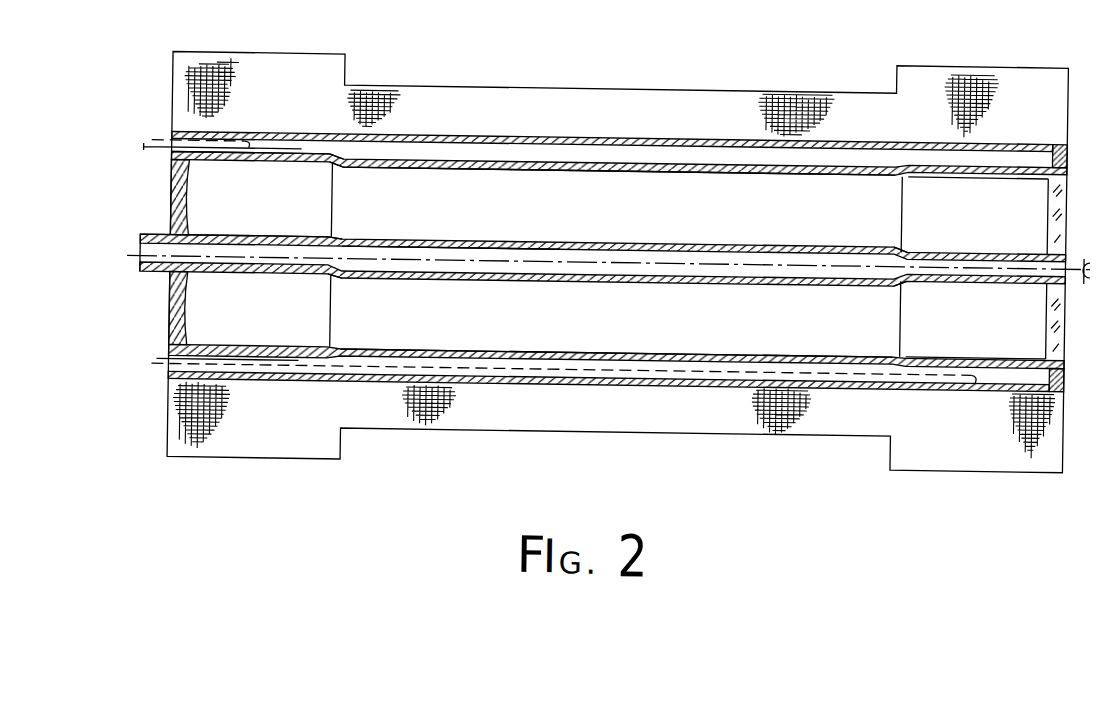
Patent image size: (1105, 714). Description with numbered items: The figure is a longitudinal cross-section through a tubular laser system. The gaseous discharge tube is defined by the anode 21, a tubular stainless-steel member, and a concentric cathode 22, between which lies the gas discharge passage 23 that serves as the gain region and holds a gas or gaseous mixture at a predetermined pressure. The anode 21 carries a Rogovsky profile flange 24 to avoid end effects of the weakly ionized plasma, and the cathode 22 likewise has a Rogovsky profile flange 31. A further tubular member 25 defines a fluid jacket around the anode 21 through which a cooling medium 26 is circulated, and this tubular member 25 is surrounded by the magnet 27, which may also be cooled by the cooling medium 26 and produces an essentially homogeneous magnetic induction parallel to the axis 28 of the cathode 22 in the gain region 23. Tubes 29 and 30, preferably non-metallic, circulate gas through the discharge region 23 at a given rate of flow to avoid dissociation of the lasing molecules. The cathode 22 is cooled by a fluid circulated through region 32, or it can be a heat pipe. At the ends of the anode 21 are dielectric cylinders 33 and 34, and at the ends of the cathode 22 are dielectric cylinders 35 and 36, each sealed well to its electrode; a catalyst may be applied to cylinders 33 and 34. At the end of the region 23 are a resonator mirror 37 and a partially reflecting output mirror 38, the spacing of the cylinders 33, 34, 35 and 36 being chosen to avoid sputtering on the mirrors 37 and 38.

The anode 21 is at (601, 169).
The cathode 22 is at (595, 220).
The gas discharge passage 23 is at (552, 215).
The Rogovsky profile flange 24 is at (334, 169).
The tubular member 25 is at (722, 108).
The cooling medium 26 is at (764, 173).
The magnet 27 is at (830, 100).
The axis 28 is at (694, 257).
The tube 29 is at (152, 148).
The tube 30 is at (152, 371).
The Rogovsky profile flange 31 is at (334, 247).
The region 32 is at (457, 264).
The dielectric cylinder 33 is at (242, 164).
The dielectric cylinder 34 is at (978, 170).
The dielectric cylinder 35 is at (272, 217).
The dielectric cylinder 36 is at (947, 216).
The resonator mirror 37 is at (171, 201).
The partially reflecting output mirror 38 is at (1062, 219).